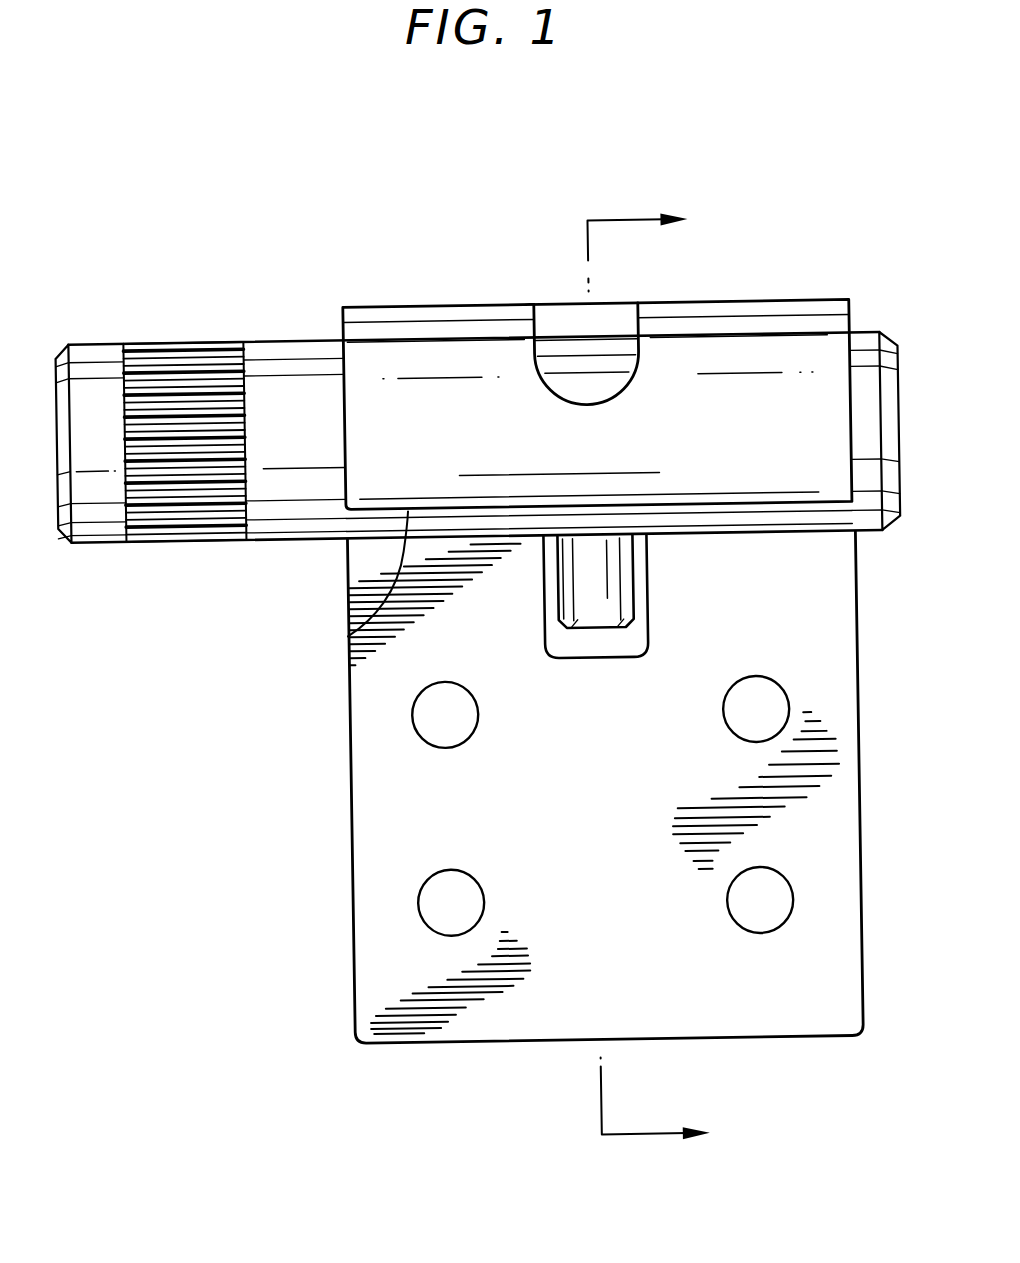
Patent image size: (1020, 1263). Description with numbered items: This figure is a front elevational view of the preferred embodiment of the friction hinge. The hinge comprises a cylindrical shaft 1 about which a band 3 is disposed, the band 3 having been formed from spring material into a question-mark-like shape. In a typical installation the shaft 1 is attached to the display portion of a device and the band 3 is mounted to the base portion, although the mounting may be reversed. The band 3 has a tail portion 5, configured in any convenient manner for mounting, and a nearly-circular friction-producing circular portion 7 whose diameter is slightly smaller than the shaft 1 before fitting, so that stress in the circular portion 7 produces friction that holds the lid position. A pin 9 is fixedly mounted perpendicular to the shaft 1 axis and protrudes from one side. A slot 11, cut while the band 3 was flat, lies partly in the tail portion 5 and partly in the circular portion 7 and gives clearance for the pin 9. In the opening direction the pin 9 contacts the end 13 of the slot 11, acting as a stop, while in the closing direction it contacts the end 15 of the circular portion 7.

The cylindrical shaft 1 is at (308, 369).
The band 3 is at (298, 589).
The tail portion 5 is at (366, 979).
The circular portion 7 is at (474, 321).
The pin 9 is at (580, 598).
The slot 11 is at (631, 312).
The end of slot 13 is at (563, 402).
The end of circular portion 15 is at (349, 634).